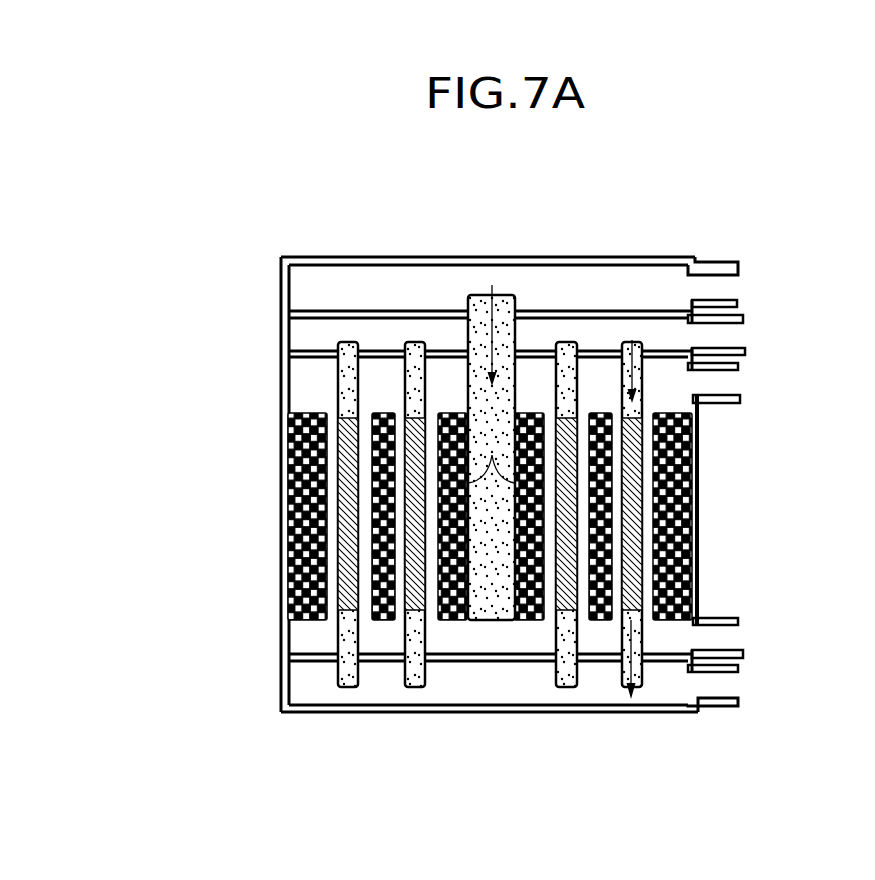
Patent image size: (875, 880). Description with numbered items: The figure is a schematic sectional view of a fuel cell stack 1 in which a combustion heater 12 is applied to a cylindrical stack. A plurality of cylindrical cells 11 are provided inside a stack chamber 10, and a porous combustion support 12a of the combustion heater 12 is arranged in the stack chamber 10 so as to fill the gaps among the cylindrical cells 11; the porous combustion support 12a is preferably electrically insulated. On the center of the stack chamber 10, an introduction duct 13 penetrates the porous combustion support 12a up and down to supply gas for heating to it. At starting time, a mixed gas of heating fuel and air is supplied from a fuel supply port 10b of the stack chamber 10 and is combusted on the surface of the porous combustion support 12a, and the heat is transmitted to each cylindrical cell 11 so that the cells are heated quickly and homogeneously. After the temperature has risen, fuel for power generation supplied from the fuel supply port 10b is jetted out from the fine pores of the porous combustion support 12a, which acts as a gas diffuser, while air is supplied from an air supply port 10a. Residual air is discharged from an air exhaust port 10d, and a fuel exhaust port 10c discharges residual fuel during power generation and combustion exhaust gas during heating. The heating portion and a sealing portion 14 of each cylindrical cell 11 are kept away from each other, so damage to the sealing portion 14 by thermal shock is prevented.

The fuel cell stack 1 is at (646, 204).
The stack chamber 10 is at (281, 385).
The air supply port 10a is at (720, 337).
The fuel supply port 10b is at (717, 287).
The fuel exhaust port 10c is at (718, 383).
The air exhaust port 10d is at (717, 686).
The cylindrical cell 11 is at (337, 642).
The combustion heater 12 is at (479, 516).
The porous combustion support 12a is at (300, 477).
The introduction duct 13 is at (470, 328).
The sealing portion 14 is at (338, 345).